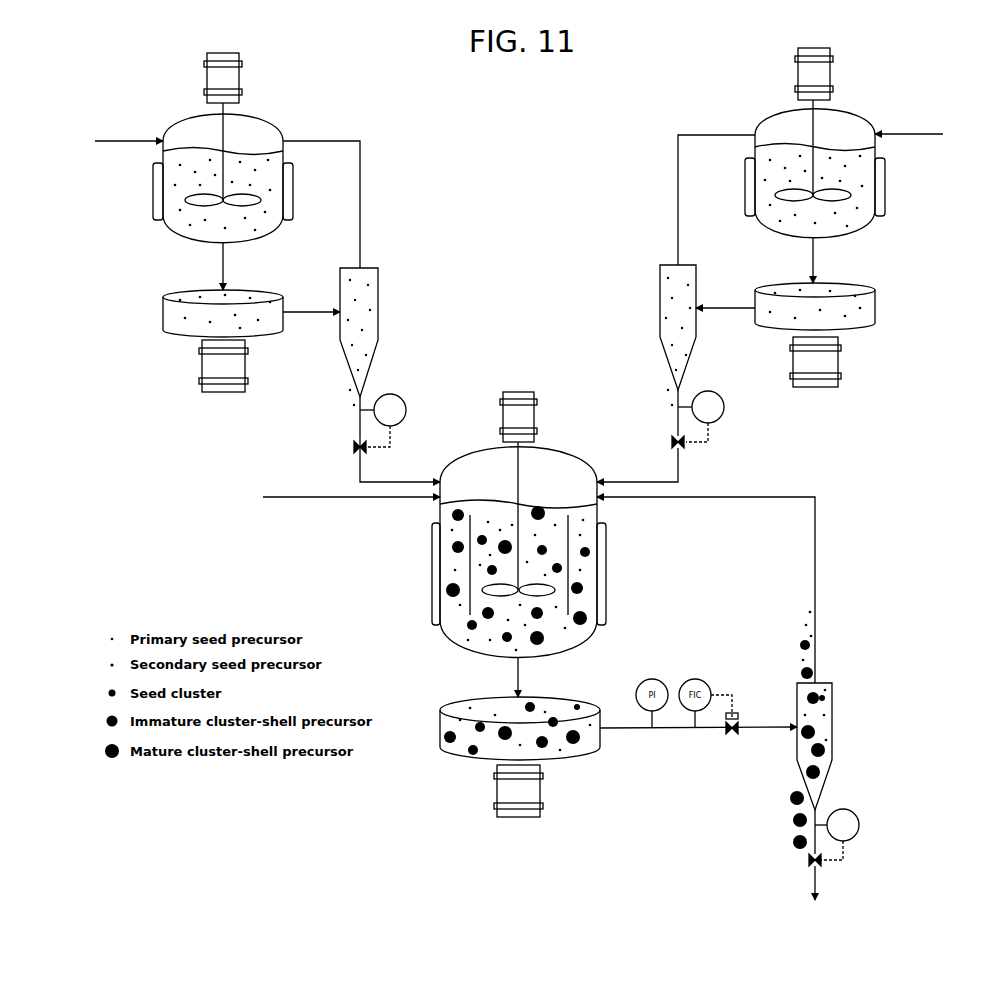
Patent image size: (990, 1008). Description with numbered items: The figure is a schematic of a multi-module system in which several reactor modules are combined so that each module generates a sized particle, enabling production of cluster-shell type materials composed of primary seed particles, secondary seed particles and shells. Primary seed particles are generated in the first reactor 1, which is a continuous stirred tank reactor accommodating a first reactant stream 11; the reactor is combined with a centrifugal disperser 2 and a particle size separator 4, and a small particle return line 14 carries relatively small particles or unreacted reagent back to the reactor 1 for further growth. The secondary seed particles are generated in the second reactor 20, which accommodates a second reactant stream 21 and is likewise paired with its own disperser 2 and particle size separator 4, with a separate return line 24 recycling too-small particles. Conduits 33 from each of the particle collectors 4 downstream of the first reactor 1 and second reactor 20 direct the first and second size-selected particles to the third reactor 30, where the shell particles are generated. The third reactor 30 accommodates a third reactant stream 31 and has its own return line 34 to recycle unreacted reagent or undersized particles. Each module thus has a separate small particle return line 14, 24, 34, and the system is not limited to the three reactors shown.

The continuous stirred tank reactor 1 is at (165, 229).
The first reactant stream 11 is at (117, 134).
The small particle return line 14 is at (336, 204).
The centrifugal disperser 2 is at (160, 318).
The particle size separator 4 is at (658, 325).
The small particle return line 24 is at (694, 200).
The second reactant stream 21 is at (924, 134).
The second reactor 20 is at (880, 228).
The conduits 33 is at (638, 477).
The third reactant stream 31 is at (340, 497).
The third reactor 30 is at (448, 634).
The small particle return line 34 is at (728, 698).